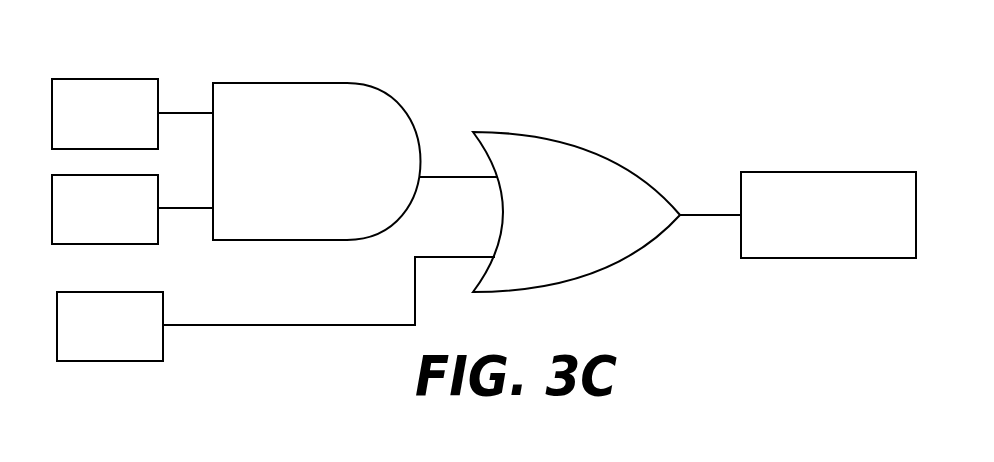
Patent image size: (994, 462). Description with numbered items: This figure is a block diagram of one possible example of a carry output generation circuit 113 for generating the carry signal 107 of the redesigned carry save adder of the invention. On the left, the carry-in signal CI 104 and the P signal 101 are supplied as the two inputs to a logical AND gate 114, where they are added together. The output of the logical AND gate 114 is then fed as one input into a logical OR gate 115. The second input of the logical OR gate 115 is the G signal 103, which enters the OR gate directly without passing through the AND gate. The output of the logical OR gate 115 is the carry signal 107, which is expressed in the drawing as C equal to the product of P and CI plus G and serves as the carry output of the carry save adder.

The P signal 101 is at (86, 140).
The carry-in signal CI 104 is at (86, 235).
The G signal 103 is at (91, 352).
The logical AND gate 114 is at (293, 181).
The logical OR gate 115 is at (554, 226).
The carry signal 107 is at (809, 241).
The carry output generation circuit 113 is at (474, 72).